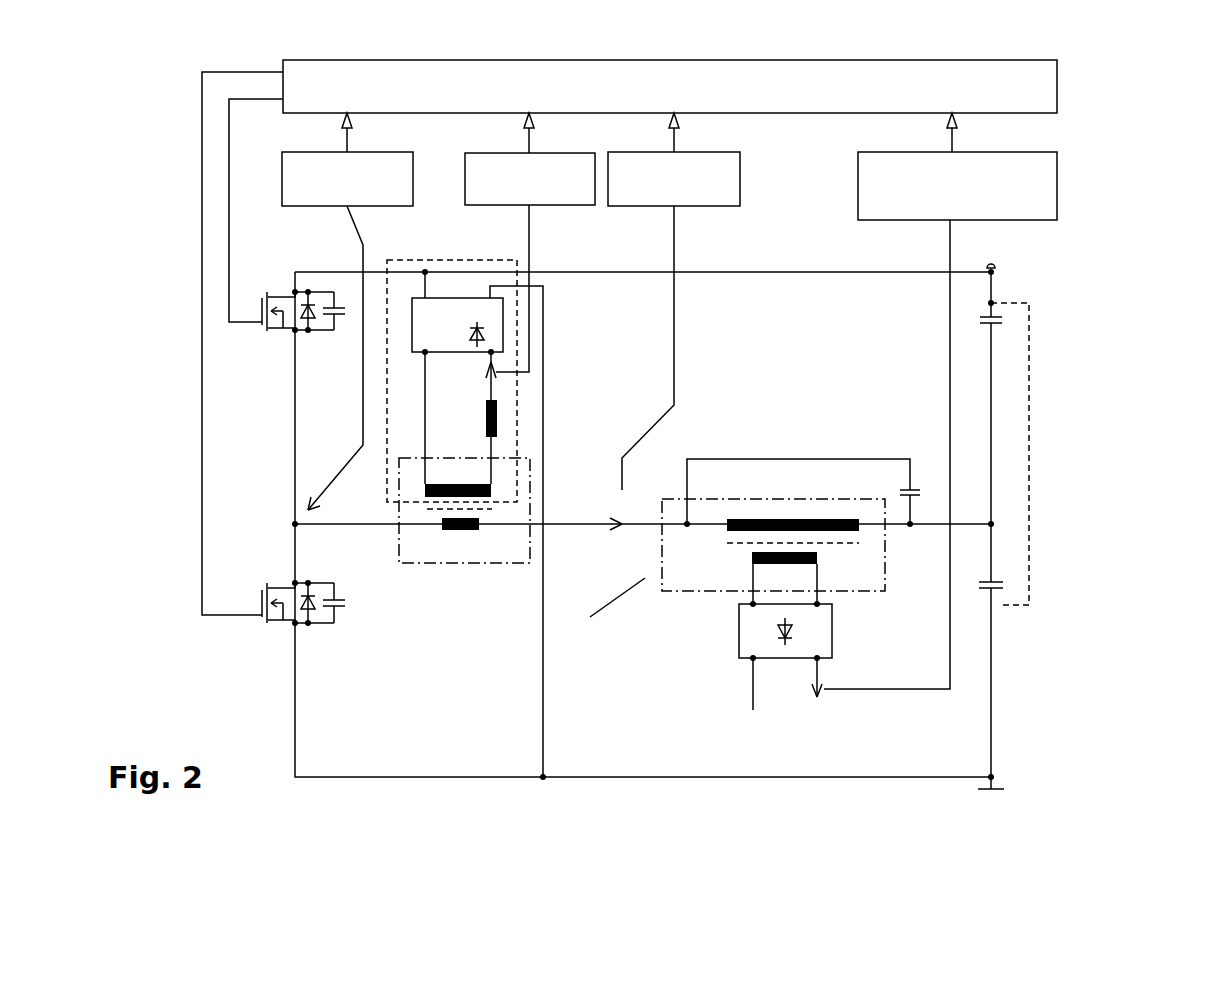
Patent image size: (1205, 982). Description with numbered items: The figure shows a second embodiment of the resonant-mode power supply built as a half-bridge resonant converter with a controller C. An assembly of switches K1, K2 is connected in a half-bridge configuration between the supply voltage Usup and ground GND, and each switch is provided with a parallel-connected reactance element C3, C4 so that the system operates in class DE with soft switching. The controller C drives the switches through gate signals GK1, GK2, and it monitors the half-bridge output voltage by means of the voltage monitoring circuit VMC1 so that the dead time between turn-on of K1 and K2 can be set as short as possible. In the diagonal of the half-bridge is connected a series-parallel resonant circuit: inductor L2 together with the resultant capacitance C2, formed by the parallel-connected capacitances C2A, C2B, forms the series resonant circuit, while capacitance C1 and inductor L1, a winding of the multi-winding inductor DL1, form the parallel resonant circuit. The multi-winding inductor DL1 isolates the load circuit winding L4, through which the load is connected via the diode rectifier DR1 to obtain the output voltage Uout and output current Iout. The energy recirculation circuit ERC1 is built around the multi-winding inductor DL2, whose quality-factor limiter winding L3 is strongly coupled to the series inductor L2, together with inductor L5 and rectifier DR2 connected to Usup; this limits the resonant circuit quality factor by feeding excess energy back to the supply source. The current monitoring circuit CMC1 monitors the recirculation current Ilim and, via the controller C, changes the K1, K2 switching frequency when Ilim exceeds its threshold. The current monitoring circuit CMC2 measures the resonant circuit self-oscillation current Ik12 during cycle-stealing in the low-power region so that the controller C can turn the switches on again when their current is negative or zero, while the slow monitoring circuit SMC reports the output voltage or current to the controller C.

The controller C is at (670, 74).
The gate control signal for first switch GK1 is at (275, 206).
The gate control signal for second switch GK2 is at (262, 339).
The voltage monitoring circuit VMC1 is at (323, 311).
The current monitoring circuit CMC1 is at (530, 242).
The current monitoring circuit CMC2 is at (701, 301).
The slow circuit monitoring output voltage or current SMC is at (955, 401).
The switch K1 is at (265, 311).
The switch K2 is at (265, 601).
The reactance element C3 is at (342, 318).
The reactance element C4 is at (344, 608).
The energy recirculation circuit ERC1 is at (452, 369).
The diode rectifier DR2 is at (477, 524).
The recirculation circuit current Ilim is at (470, 376).
The inductor L5 is at (476, 442).
The quality-factor limiter winding L3 is at (458, 486).
The inductor L2 is at (460, 541).
The multi-winding inductor DL2 is at (464, 542).
The resonant circuit self-oscillation current Ik12 is at (630, 513).
The multi-winding inductor DL1 is at (732, 600).
The inductor L1 is at (771, 535).
The load circuit winding L4 is at (784, 578).
The diode rectifier DR1 is at (810, 631).
The output voltage Uout is at (778, 688).
The output current Iout is at (834, 688).
The capacitance C1 is at (812, 493).
The resultant capacitance C2 is at (1074, 454).
The capacitance C2A is at (1006, 399).
The capacitance C2B is at (1005, 650).
The supply voltage Usup is at (1009, 254).
The ground GND is at (992, 797).